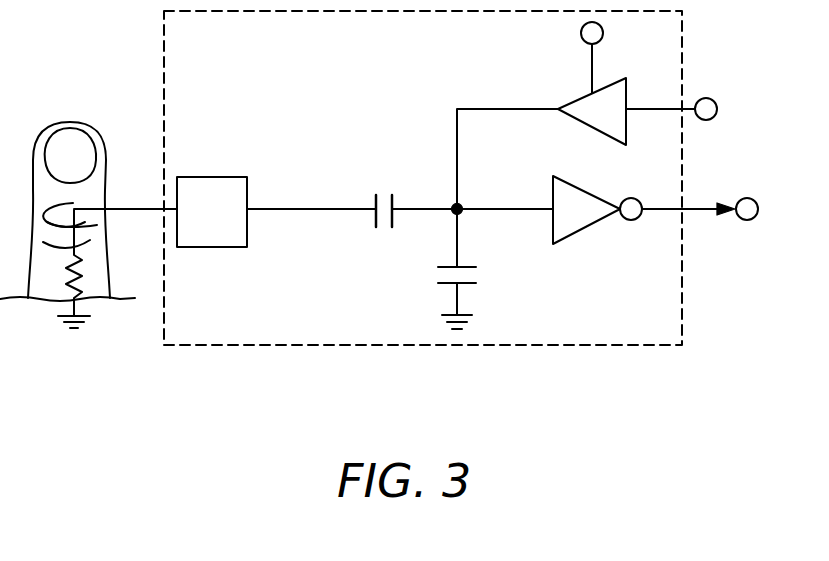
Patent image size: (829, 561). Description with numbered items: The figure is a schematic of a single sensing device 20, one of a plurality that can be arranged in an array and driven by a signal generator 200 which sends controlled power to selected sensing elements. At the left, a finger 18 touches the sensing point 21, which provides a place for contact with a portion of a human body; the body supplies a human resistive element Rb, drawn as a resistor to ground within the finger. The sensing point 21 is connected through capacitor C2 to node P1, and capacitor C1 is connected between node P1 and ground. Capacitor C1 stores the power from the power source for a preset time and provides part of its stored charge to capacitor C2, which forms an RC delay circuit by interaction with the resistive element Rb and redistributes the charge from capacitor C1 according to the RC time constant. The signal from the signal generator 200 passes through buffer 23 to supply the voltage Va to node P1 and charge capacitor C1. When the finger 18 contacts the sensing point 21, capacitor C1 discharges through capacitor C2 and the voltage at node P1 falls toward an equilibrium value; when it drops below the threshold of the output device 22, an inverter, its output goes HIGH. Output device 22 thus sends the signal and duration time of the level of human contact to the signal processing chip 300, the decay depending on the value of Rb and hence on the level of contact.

The finger 18 is at (55, 124).
The human resistive element Rb is at (62, 269).
The sensing device 20 is at (385, 345).
The sensing point 21 is at (208, 247).
The capacitor C2 is at (388, 196).
The node P1 is at (461, 205).
The capacitor C1 is at (472, 271).
The buffer 23 is at (630, 88).
The output device 22 is at (593, 227).
The signal generator 200 is at (713, 98).
The signal processing chip 300 is at (752, 220).